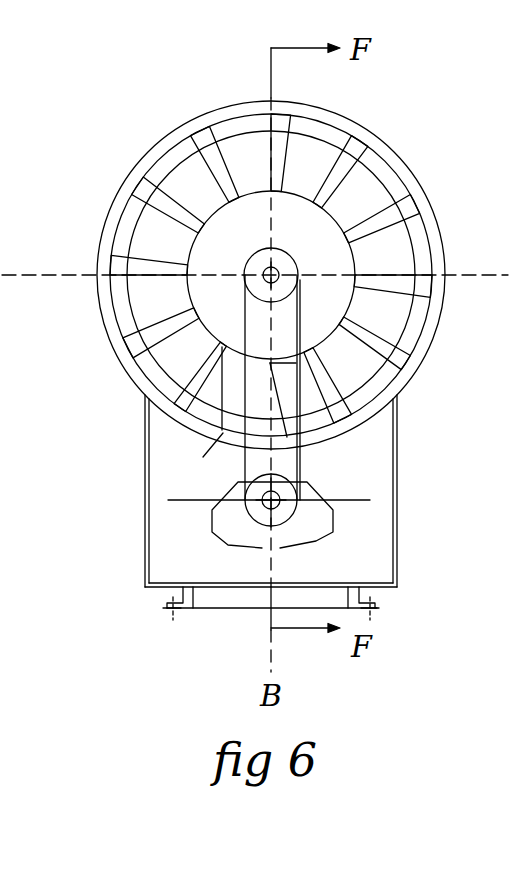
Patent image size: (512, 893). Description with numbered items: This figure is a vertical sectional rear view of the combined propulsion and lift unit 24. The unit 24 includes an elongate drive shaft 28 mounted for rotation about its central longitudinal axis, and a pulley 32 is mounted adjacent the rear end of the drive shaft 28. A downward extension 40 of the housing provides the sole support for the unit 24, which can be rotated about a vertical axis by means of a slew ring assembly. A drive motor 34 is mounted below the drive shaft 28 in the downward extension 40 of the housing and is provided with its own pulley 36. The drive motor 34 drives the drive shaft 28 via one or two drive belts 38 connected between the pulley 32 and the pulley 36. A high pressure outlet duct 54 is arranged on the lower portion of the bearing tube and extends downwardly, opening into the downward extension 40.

The combined propulsion and lift unit 24 is at (271, 247).
The drive shaft 28 is at (312, 224).
The pulley 32 is at (252, 260).
The drive motor 34 is at (217, 549).
The pulley 36 is at (312, 519).
The drive belts 38 is at (311, 458).
The downward extension of housing 40 is at (413, 492).
The high pressure outlet duct 54 is at (211, 397).